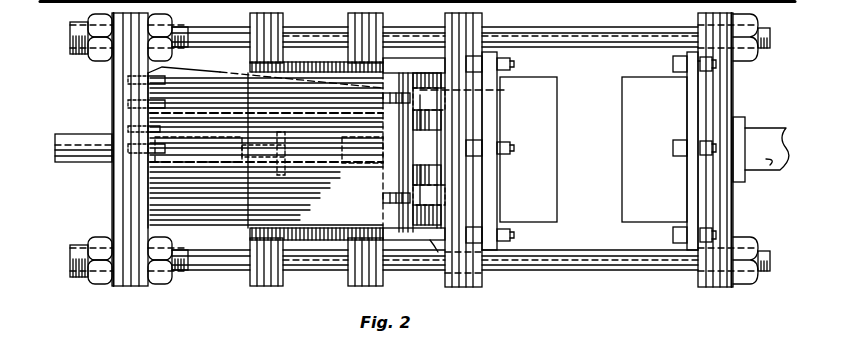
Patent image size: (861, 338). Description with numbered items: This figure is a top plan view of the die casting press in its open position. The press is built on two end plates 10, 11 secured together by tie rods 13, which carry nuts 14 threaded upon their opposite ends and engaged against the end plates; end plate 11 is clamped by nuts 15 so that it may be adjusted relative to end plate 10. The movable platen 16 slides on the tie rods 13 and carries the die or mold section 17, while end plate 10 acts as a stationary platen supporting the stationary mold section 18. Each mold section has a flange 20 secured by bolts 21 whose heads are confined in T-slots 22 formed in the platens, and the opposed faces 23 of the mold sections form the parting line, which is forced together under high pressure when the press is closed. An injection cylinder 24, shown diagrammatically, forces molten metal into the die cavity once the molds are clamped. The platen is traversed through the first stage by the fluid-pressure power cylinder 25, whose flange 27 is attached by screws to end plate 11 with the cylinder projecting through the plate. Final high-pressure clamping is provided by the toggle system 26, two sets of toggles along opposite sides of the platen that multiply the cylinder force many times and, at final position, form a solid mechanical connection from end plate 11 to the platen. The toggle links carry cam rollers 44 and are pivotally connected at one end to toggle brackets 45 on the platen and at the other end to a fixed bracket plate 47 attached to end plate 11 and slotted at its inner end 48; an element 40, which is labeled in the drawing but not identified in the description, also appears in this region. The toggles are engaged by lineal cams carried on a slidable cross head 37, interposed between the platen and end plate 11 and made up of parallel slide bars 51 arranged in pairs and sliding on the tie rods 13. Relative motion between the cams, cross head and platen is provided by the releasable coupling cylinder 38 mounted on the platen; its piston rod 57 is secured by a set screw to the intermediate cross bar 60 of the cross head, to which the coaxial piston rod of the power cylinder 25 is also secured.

The end plate 10 is at (725, 88).
The end plate 11 is at (125, 207).
The tie rods 13 is at (591, 34).
The nuts 14 is at (100, 17).
The nuts 15 is at (165, 20).
The movable platen 16 is at (470, 21).
The die or mold section 17 is at (542, 128).
The stationary mold section 18 is at (622, 192).
The flange 20 is at (488, 214).
The bolts 21 is at (506, 235).
The T-slots 22 is at (470, 170).
The opposed faces 23 is at (622, 92).
The injection cylinder 24 is at (762, 168).
The fluid-pressure power cylinder 25 is at (62, 137).
The toggle system 26 is at (412, 56).
The flange 27 is at (112, 184).
The cross head 37 is at (287, 20).
The coupling cylinder 38 is at (355, 166).
The guide frame 40 is at (195, 66).
The cam rollers 44 is at (474, 94).
The toggle brackets 45 is at (435, 240).
The bracket plate 47 is at (200, 207).
The slot 48 is at (383, 99).
The slide bars 51 is at (250, 20).
The piston rod 57 is at (325, 152).
The cross bar 60 is at (283, 180).